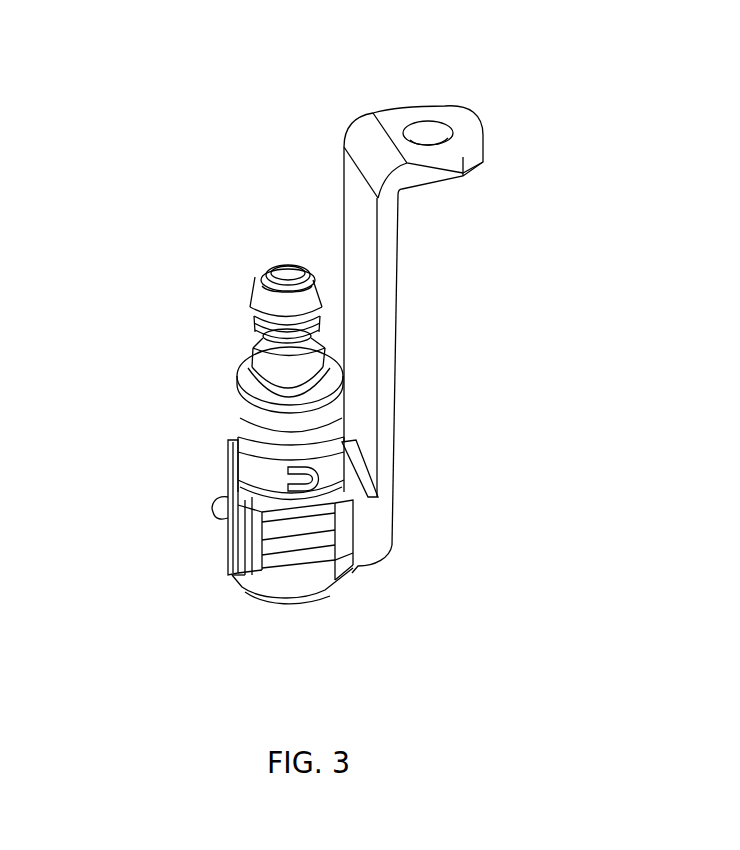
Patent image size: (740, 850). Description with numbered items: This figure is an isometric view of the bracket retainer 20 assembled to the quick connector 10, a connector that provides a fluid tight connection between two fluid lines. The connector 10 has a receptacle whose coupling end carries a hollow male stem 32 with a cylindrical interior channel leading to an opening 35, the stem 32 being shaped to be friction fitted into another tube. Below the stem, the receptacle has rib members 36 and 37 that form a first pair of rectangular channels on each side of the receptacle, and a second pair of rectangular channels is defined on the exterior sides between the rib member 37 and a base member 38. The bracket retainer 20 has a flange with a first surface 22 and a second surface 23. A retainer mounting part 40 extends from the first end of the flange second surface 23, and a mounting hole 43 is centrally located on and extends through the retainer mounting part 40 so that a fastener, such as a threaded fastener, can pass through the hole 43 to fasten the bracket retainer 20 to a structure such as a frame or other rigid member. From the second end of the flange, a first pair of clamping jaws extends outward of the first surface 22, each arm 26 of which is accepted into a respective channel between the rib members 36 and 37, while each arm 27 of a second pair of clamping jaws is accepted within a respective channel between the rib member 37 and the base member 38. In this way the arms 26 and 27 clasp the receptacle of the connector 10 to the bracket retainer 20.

The quick connector 10 is at (217, 280).
The bracket retainer 20 is at (465, 61).
The first surface 22 is at (362, 243).
The second surface 23 is at (398, 335).
The arm 26 is at (320, 537).
The arm 27 is at (313, 575).
The male stem 32 is at (275, 375).
The opening 35 is at (287, 270).
The rib member 36 is at (262, 508).
The rib member 37 is at (287, 562).
The base member 38 is at (297, 593).
The retainer mounting part 40 is at (478, 137).
The mounting hole 43 is at (427, 133).